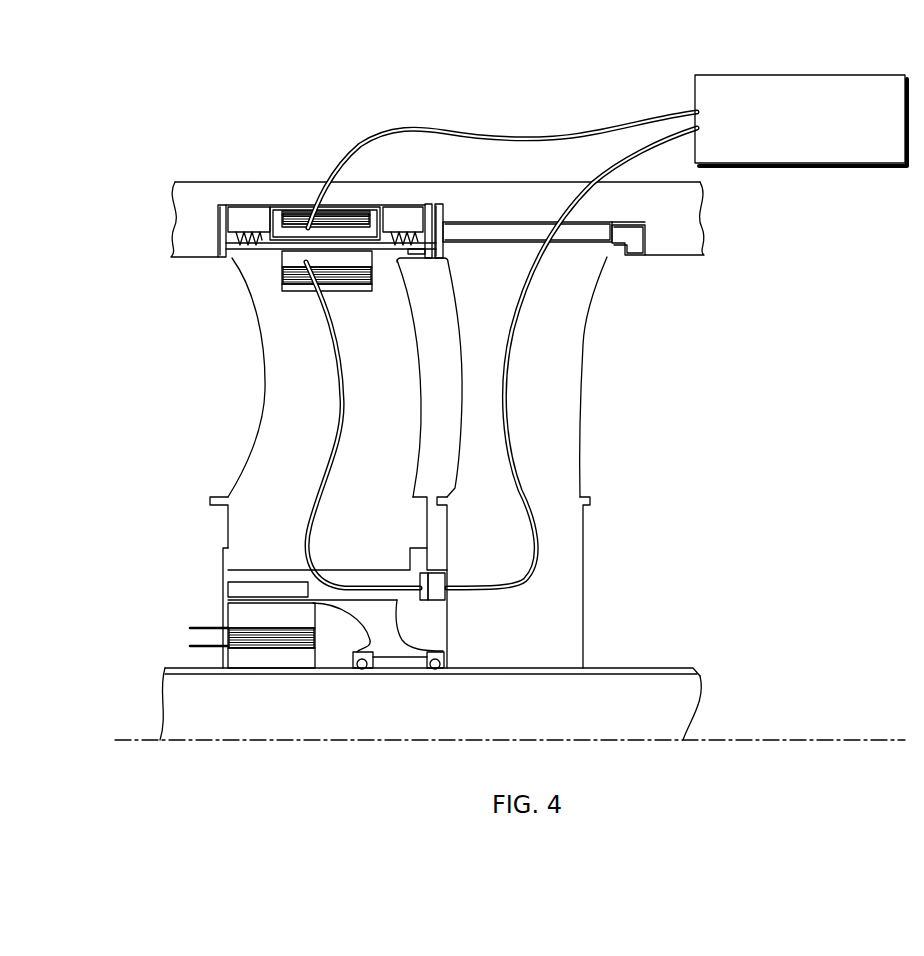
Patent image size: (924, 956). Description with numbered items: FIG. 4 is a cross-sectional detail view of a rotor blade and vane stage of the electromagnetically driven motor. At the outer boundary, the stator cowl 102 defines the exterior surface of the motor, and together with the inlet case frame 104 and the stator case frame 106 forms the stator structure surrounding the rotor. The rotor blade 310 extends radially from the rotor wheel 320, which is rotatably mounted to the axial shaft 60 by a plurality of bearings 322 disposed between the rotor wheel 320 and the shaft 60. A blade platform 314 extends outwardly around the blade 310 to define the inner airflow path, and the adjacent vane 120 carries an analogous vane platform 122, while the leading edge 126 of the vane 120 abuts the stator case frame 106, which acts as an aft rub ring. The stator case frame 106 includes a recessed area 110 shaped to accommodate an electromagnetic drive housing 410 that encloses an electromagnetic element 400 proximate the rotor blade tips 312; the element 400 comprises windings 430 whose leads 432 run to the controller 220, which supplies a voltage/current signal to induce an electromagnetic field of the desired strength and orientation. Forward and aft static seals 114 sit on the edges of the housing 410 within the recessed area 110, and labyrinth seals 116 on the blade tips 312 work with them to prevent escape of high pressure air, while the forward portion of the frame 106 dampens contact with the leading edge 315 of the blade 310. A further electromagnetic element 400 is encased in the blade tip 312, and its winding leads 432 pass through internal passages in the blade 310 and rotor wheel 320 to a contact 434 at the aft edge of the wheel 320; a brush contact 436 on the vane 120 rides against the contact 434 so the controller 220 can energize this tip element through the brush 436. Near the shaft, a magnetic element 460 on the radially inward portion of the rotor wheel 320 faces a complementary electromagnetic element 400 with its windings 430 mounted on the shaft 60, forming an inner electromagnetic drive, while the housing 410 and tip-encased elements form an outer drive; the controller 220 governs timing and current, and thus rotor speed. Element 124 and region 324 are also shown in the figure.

The axial shaft 60 is at (668, 690).
The stator cowl 102 is at (173, 190).
The inlet case frame 104 is at (625, 205).
The stator case frame 106 is at (222, 204).
The recessed area 110 is at (292, 210).
The static seals 114 is at (248, 216).
The labyrinth seals 116 is at (226, 245).
The vane 120 is at (565, 385).
The vane platform 122 is at (448, 502).
The bracket 124 is at (637, 232).
The leading edge 126 is at (445, 236).
The controller 220 is at (845, 165).
The rotor blade 310 is at (290, 402).
The rotor blade tips 312 is at (393, 272).
The blade platform 314 is at (212, 497).
The leading edge 315 is at (238, 255).
The rotor wheel 320 is at (380, 622).
The bearings 322 is at (435, 668).
The lower housing 324 is at (225, 555).
The electromagnetic elements 400 is at (306, 208).
The electromagnetic drive housing 410 is at (388, 206).
The windings 430 is at (322, 218).
The leads 432 is at (445, 130).
The contact 434 is at (435, 598).
The brush contact 436 is at (447, 580).
The magnetic element 460 is at (236, 590).